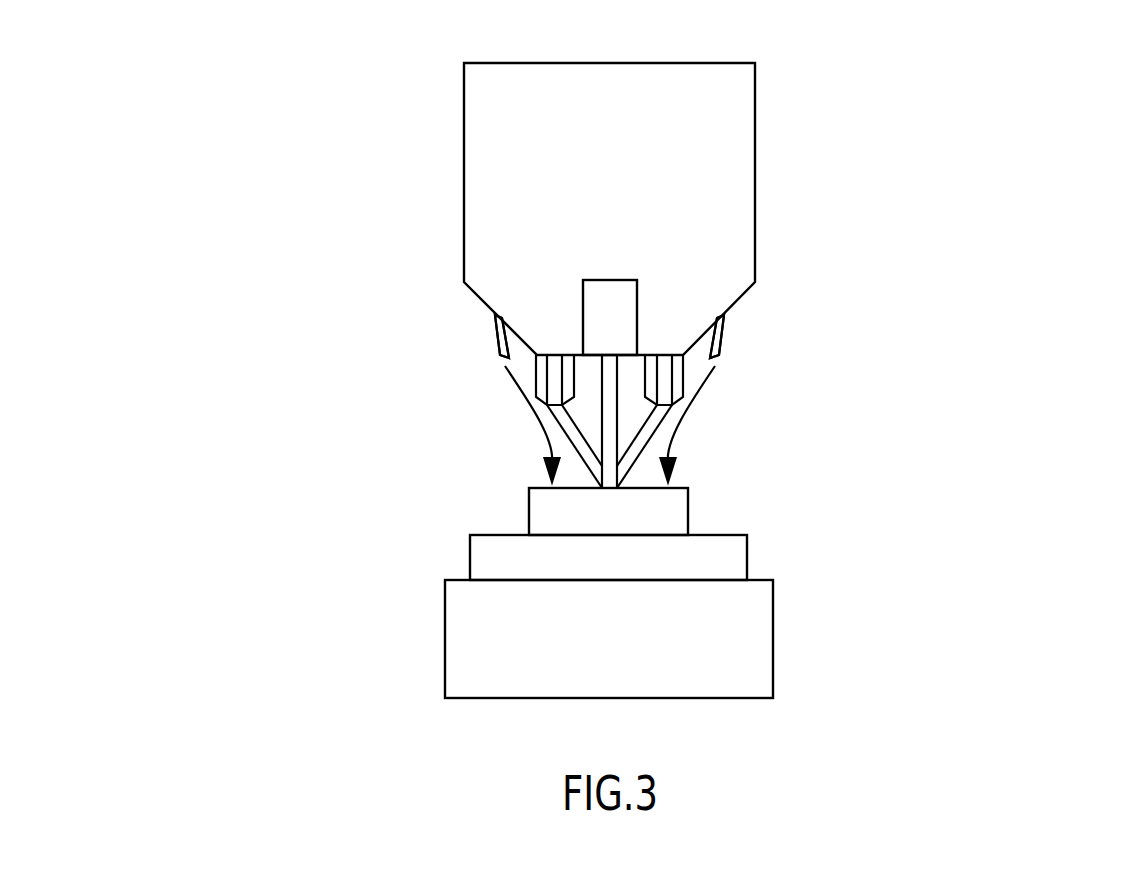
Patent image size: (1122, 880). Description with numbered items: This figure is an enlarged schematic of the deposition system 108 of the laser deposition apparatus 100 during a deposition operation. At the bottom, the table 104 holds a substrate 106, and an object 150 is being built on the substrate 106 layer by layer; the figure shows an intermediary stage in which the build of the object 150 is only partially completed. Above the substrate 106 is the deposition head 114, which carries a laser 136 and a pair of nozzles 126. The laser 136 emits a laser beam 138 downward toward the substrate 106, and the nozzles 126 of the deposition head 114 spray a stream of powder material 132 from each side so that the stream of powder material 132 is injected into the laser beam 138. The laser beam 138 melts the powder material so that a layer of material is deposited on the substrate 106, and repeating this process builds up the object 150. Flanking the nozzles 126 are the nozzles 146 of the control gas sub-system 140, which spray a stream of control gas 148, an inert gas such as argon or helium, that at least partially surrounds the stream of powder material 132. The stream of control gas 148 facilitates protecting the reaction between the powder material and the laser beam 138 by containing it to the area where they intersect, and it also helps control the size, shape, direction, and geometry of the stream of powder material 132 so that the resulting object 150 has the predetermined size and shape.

The laser deposition apparatus 100 is at (1006, 115).
The table 104 is at (775, 640).
The substrate 106 is at (748, 560).
The deposition system 108 is at (356, 137).
The deposition head 114 is at (624, 178).
The nozzles 126 is at (538, 364).
The stream of powder material 132 is at (572, 438).
The laser 136 is at (638, 288).
The laser beam 138 is at (602, 482).
The control gas sub-system 140 is at (474, 310).
The nozzles 146 is at (497, 338).
The stream of control gas 148 is at (533, 430).
The object 150 is at (688, 513).